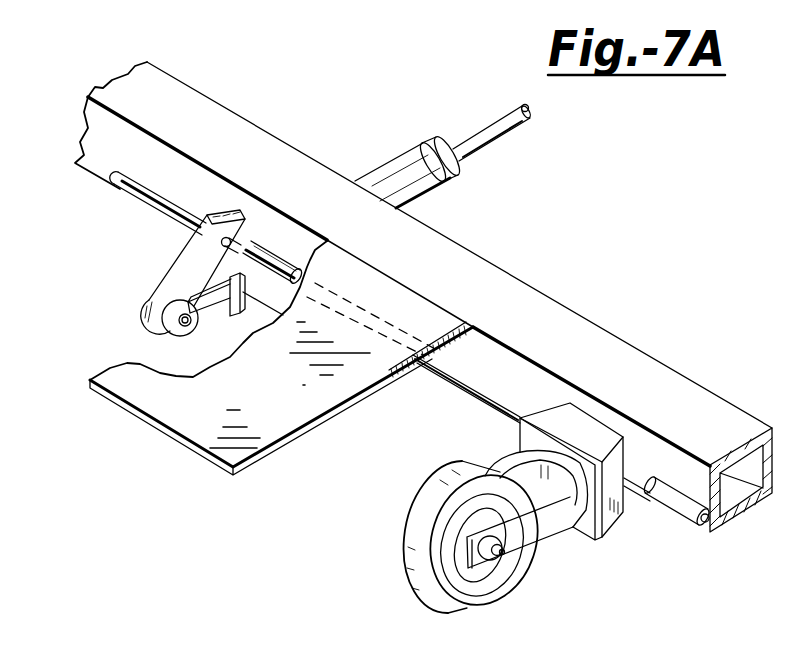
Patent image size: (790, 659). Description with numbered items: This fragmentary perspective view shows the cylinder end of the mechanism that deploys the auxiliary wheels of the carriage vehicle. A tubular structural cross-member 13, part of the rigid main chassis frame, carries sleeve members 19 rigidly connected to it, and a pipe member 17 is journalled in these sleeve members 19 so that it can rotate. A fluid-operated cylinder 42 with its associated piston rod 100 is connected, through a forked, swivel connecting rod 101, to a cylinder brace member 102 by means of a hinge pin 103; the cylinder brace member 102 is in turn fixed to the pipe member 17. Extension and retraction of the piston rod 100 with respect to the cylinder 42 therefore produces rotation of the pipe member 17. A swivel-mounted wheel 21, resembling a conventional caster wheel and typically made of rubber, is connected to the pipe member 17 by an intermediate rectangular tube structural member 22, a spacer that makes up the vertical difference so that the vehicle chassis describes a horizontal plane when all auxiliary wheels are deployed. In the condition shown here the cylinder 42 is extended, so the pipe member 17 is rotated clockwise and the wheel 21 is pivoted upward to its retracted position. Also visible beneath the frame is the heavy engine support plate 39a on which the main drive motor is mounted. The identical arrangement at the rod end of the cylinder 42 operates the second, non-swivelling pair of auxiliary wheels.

The tubular structural cross-member 13 is at (193, 123).
The cylinder 42 is at (383, 170).
The piston rod 100 is at (468, 134).
The pipe member 17 is at (127, 163).
The sleeve member 19 is at (263, 256).
The cylinder brace member 102 is at (178, 258).
The forked, swivel connecting rod 101 is at (190, 326).
The hinge pin 103 is at (192, 326).
The engine support plate 39a is at (289, 410).
The swivel-mounted wheel 21 is at (400, 533).
The rectangular tube structural member 22 is at (620, 520).